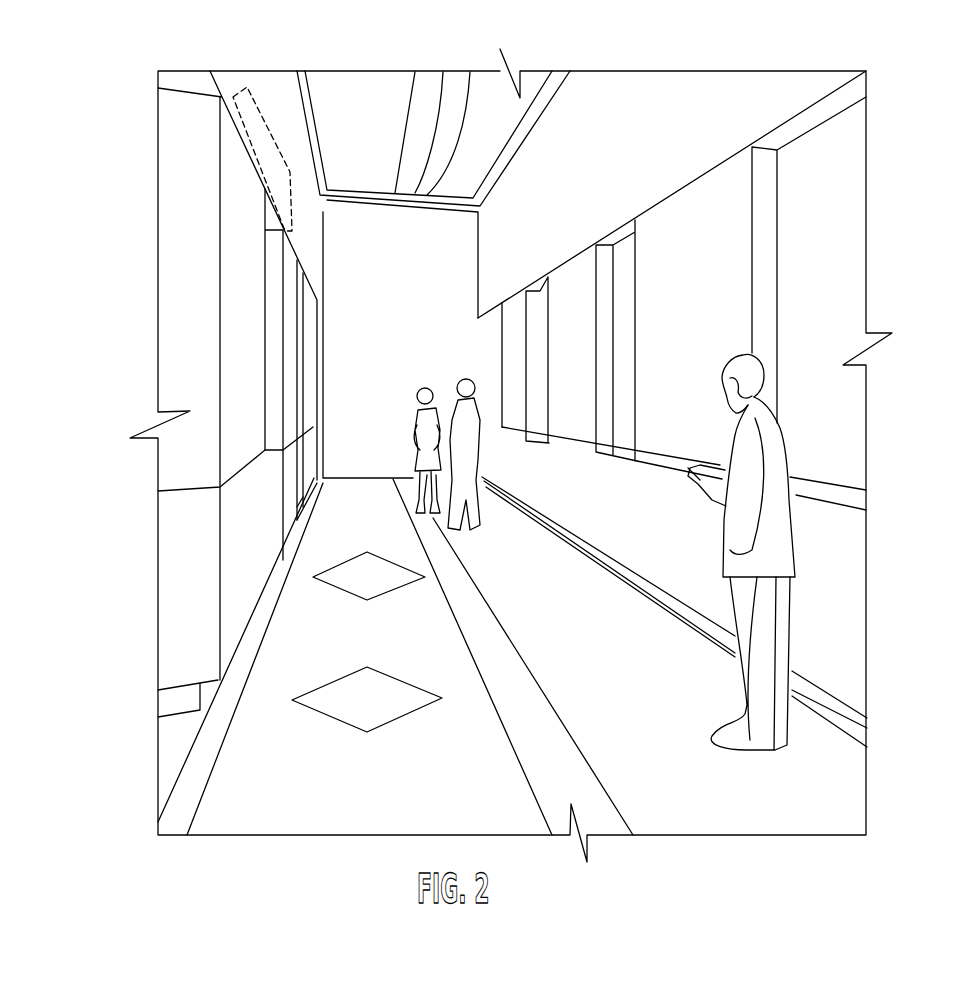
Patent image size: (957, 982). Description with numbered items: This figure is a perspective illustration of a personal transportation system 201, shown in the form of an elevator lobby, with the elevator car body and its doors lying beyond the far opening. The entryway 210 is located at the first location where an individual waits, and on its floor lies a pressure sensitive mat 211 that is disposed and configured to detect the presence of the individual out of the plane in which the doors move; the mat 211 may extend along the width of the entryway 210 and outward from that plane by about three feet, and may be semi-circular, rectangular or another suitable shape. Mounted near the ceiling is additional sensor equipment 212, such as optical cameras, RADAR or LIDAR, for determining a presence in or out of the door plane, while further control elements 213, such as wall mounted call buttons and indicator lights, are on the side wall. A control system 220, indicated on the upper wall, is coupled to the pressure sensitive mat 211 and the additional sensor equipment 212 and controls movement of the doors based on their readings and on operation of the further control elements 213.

The personal transportation system 201 is at (157, 116).
The entryway 210 is at (276, 558).
The pressure sensitive mat 211 is at (330, 693).
The additional sensor equipment 212 is at (470, 71).
The further control elements 213 is at (205, 470).
The control system 220 is at (255, 130).